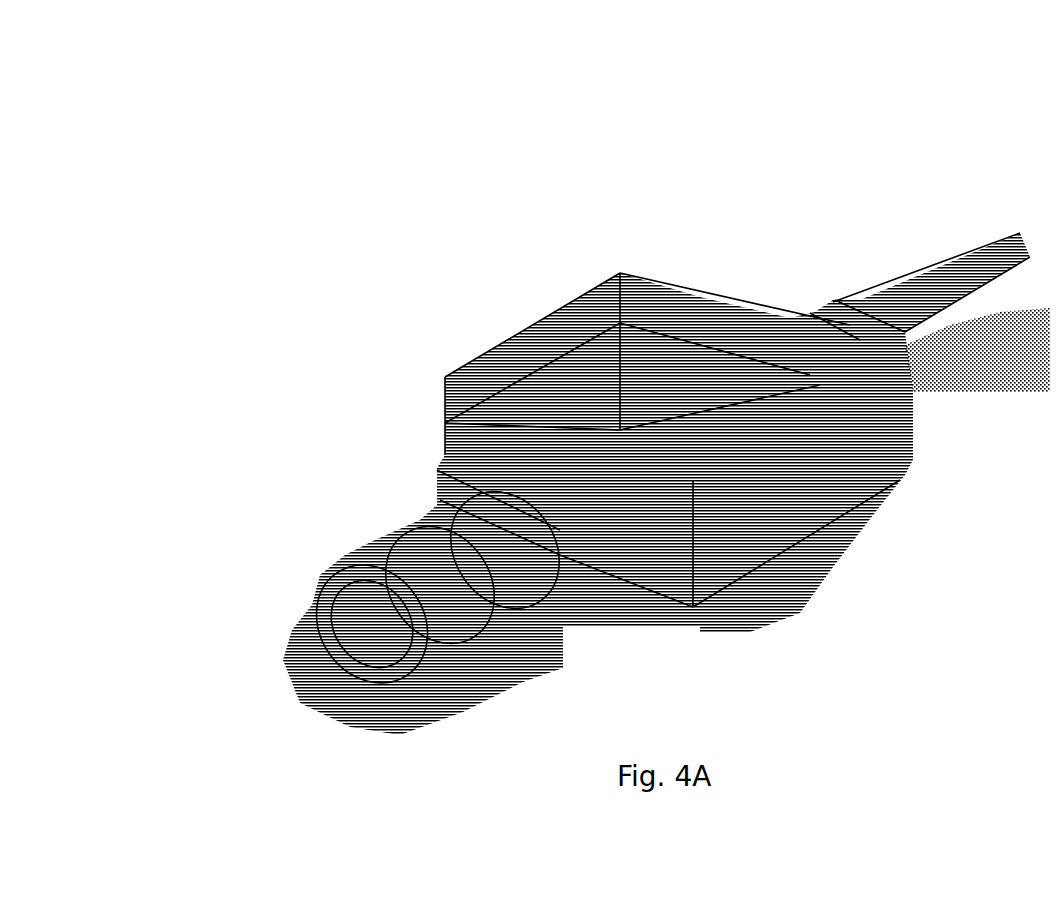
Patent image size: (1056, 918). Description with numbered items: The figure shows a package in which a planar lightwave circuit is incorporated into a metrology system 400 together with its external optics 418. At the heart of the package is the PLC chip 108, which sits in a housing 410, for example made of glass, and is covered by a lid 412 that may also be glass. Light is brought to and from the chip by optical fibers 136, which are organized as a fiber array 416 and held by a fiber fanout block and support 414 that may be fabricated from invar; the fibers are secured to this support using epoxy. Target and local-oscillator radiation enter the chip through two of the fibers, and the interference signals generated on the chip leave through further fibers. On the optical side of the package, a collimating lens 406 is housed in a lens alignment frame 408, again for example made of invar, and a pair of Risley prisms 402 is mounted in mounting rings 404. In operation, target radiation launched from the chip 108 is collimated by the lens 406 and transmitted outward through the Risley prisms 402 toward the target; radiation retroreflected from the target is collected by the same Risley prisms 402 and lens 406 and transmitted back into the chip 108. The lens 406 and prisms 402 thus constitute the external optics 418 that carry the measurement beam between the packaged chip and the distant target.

The metrology system 400 is at (545, 147).
The optical fibers 136 is at (980, 240).
The lid 412 is at (543, 330).
The fiber fanout block and support 414 is at (808, 308).
The fiber array 416 is at (725, 412).
The lens alignment frame 408 is at (460, 468).
The mounting rings 404 is at (373, 538).
The housing 410 is at (850, 470).
The PLC chip 108 is at (730, 490).
The collimating lens 406 is at (512, 592).
The Risley prisms 402 is at (434, 652).
The external optics 418 is at (316, 712).